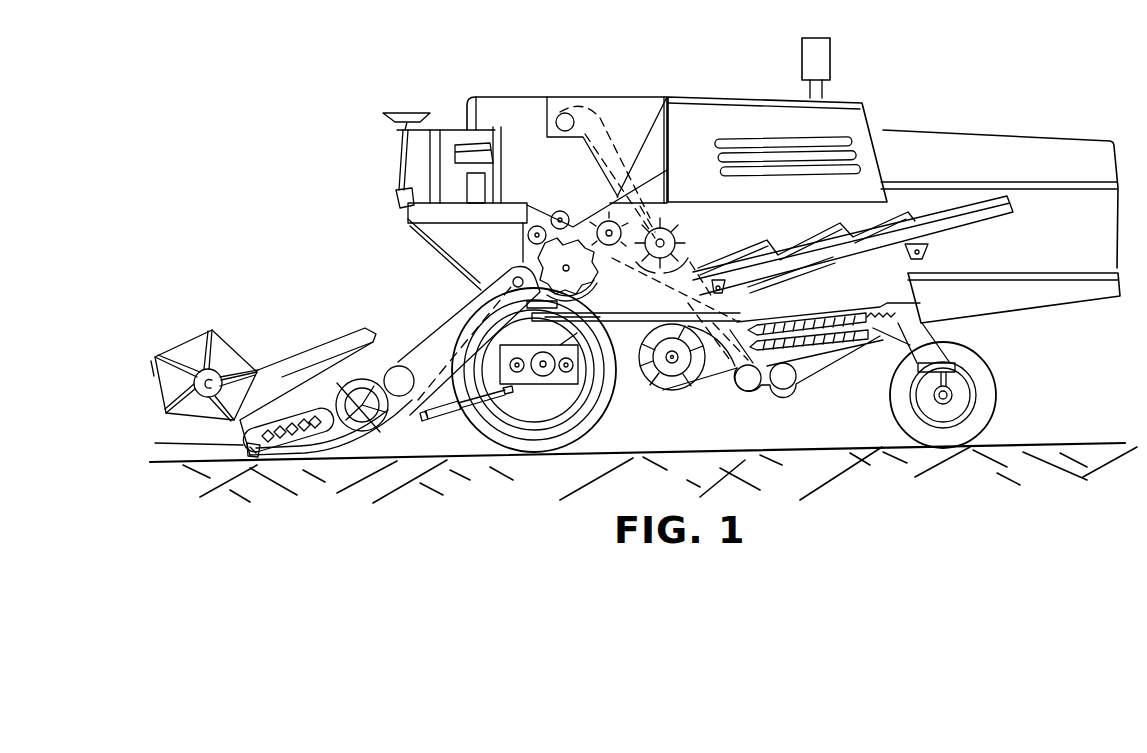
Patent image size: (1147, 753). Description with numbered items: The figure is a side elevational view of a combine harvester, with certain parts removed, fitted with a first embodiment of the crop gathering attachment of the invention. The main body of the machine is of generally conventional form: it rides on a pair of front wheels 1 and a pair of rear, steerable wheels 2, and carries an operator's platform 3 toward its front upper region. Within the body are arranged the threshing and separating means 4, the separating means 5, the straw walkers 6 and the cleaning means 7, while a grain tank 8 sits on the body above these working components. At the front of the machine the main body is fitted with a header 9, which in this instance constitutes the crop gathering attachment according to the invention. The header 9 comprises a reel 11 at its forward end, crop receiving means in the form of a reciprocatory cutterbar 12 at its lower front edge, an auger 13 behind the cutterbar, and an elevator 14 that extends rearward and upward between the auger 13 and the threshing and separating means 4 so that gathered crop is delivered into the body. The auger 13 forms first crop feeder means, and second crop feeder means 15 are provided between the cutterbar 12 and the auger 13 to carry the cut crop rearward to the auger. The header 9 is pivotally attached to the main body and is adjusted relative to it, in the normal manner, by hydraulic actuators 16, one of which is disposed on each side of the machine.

The front wheels 1 is at (597, 423).
The rear steerable wheels 2 is at (1000, 392).
The operator's platform 3 is at (410, 212).
The threshing and separating means 4 is at (528, 255).
The separating means 5 is at (698, 240).
The straw walkers 6 is at (990, 214).
The cleaning means 7 is at (721, 374).
The grain tank 8 is at (527, 108).
The header 9 is at (276, 387).
The reel 11 is at (185, 343).
The reciprocatory cutterbar 12 is at (235, 450).
The auger 13 is at (378, 368).
The elevator 14 is at (445, 330).
The second crop feeder means 15 is at (289, 417).
The hydraulic actuators 16 is at (453, 427).